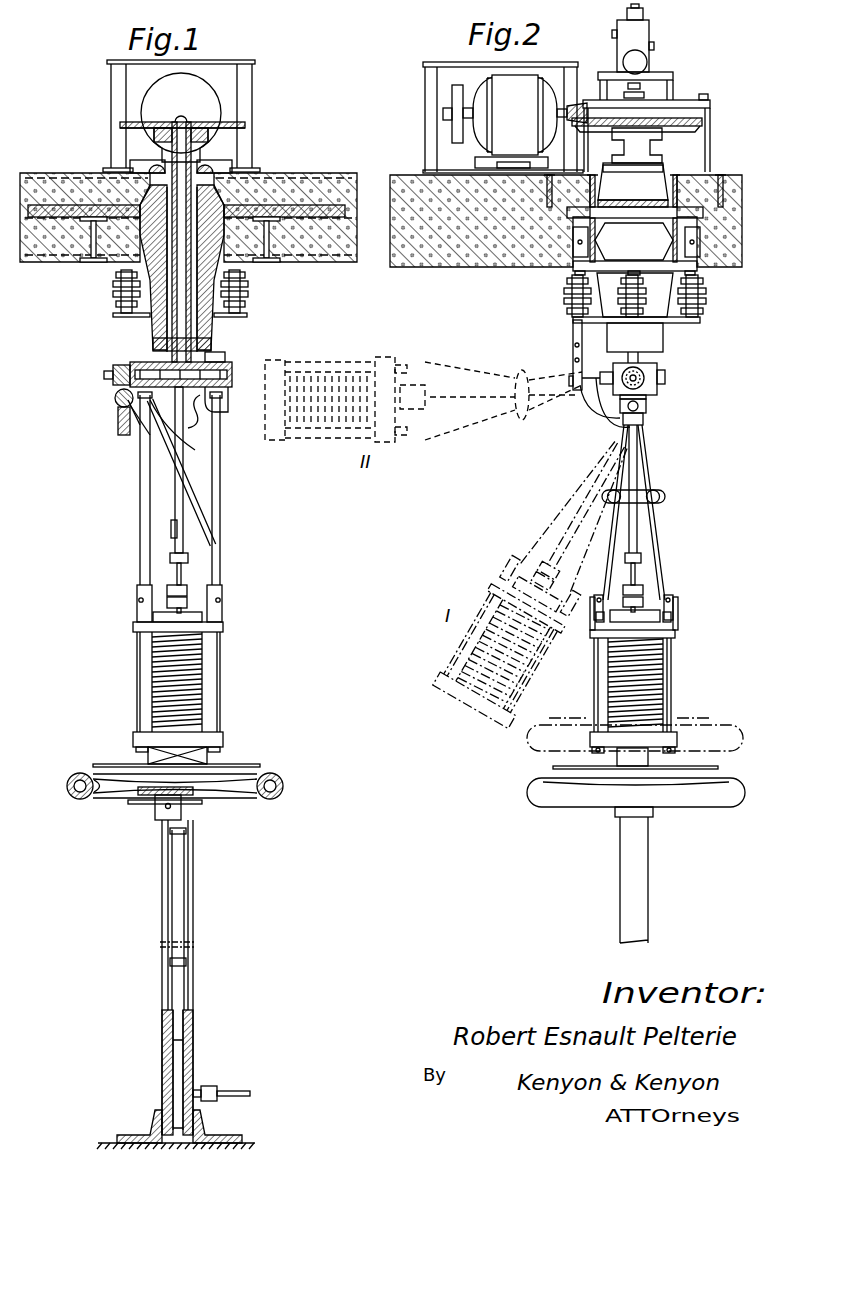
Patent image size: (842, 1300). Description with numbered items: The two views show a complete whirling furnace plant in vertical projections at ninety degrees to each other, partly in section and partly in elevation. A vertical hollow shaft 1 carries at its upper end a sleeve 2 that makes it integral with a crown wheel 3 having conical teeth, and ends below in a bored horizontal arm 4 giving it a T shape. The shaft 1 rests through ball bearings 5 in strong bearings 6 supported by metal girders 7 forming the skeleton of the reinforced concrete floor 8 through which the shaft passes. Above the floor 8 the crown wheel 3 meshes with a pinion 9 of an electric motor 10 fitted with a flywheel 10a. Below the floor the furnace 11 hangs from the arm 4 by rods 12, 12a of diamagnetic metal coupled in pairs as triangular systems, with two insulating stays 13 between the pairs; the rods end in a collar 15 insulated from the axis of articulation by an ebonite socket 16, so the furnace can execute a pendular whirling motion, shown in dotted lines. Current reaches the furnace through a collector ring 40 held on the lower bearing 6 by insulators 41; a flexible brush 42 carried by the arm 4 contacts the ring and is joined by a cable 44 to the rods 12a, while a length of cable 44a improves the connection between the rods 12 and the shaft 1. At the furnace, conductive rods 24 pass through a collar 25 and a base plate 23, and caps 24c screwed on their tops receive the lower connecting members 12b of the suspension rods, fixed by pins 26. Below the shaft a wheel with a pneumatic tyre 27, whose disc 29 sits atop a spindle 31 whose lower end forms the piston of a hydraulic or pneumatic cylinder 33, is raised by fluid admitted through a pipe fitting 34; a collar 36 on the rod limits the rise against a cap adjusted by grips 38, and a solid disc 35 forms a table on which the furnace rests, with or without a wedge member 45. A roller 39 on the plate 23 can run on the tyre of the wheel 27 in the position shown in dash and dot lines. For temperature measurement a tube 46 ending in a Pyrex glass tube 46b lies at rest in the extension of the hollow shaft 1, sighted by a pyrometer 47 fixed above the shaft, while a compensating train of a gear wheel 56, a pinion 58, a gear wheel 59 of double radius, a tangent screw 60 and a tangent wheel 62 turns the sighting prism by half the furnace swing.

In FIG. 1, the vertical hollow shaft 1 is at (166, 305).
In FIG. 1, the sleeve 2 is at (208, 140).
In FIG. 2, the sleeve 2 is at (624, 150).
In FIG. 1, the crown wheel 3 is at (237, 124).
In FIG. 2, the crown wheel 3 is at (680, 132).
In FIG. 1, the horizontal arm 4 is at (130, 418).
In FIG. 1, the ball bearings 5 is at (225, 192).
In FIG. 1, the bearings 6 is at (130, 166).
In FIG. 1, the metal girders 7 is at (45, 200).
In FIG. 2, the metal girders 7 is at (700, 205).
In FIG. 1, the reinforced concrete floor 8 is at (340, 258).
In FIG. 2, the reinforced concrete floor 8 is at (420, 267).
In FIG. 2, the pinion 9 is at (580, 125).
In FIG. 1, the electric motor 10 is at (190, 93).
In FIG. 2, the electric motor 10 is at (515, 121).
In FIG. 2, the flywheel 10a is at (452, 90).
In FIG. 1, the furnace 11 is at (183, 690).
In FIG. 2, the furnace 11 is at (648, 668).
In FIG. 1, the suspension rods 12 is at (138, 486).
In FIG. 2, the suspension rods 12 is at (615, 500).
In FIG. 1, the suspension rods 12a is at (221, 495).
In FIG. 2, the lower connecting members 12b is at (673, 590).
In FIG. 1, the stays 13 is at (196, 545).
In FIG. 1, the collar or strap 15 is at (226, 400).
In FIG. 1, the insulating socket 16 is at (224, 360).
In FIG. 1, the base plate 23 is at (223, 738).
In FIG. 2, the base plate 23 is at (680, 752).
In FIG. 1, the rods 24 is at (137, 705).
In FIG. 2, the rods 24 is at (672, 705).
In FIG. 2, the caps 24c is at (678, 605).
In FIG. 1, the collar 25 is at (223, 628).
In FIG. 2, the collar 25 is at (675, 634).
In FIG. 1, the spindles or pins 26 is at (137, 600).
In FIG. 2, the spindles or pins 26 is at (596, 618).
In FIG. 1, the wheel with pneumatic tyre 27 is at (283, 792).
In FIG. 2, the wheel with pneumatic tyre 27 is at (548, 797).
In FIG. 1, the disc 29 is at (105, 794).
In FIG. 1, the spindle 31 is at (178, 890).
In FIG. 1, the hydraulic or pneumatic cylinder 33 is at (193, 1041).
In FIG. 1, the pipe fitting 34 is at (208, 1088).
In FIG. 1, the solid disc 35 is at (258, 766).
In FIG. 2, the solid disc 35 is at (610, 770).
In FIG. 1, the collar 36 is at (190, 838).
In FIG. 1, the grips 38 is at (150, 805).
In FIG. 2, the roller 39 is at (535, 718).
In FIG. 1, the collector ring 40 is at (216, 314).
In FIG. 2, the collector ring 40 is at (688, 318).
In FIG. 1, the insulators 41 is at (114, 298).
In FIG. 2, the insulators 41 is at (564, 293).
In FIG. 2, the flexible brush 42 is at (573, 355).
In FIG. 1, the cable 44 is at (210, 420).
In FIG. 2, the cable 44 is at (578, 410).
In FIG. 1, the length of cable 44a is at (215, 448).
In FIG. 2, the length of cable 44a is at (608, 430).
In FIG. 1, the wedge member 45 is at (207, 755).
In FIG. 2, the wedge member 45 is at (617, 758).
In FIG. 1, the tube 46 is at (175, 533).
In FIG. 2, the tube 46 is at (660, 500).
In FIG. 1, the Pyrex glass tube 46b is at (183, 568).
In FIG. 2, the Pyrex glass tube 46b is at (638, 563).
In FIG. 2, the pyrometer 47 is at (649, 36).
In FIG. 1, the gear wheel 56 is at (125, 432).
In FIG. 1, the pinion 58 is at (118, 412).
In FIG. 1, the gear wheel 59 is at (120, 364).
In FIG. 2, the gear wheel 59 is at (648, 397).
In FIG. 1, the tangent screw 60 is at (105, 376).
In FIG. 2, the tangent screw 60 is at (650, 368).
In FIG. 1, the tangent wheel 62 is at (115, 398).
In FIG. 2, the tangent wheel 62 is at (657, 378).